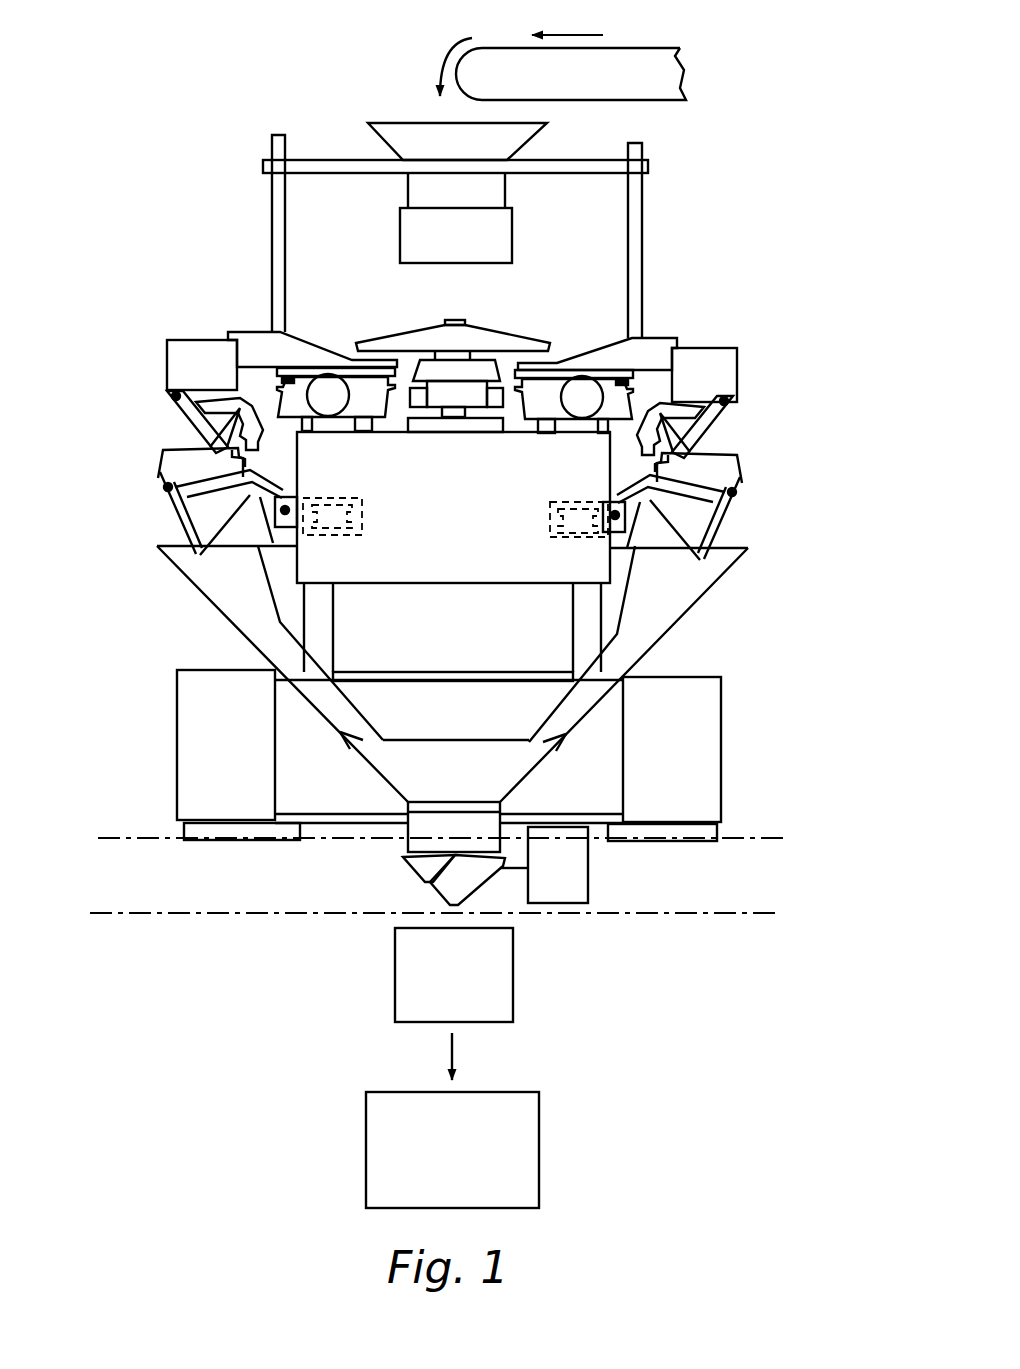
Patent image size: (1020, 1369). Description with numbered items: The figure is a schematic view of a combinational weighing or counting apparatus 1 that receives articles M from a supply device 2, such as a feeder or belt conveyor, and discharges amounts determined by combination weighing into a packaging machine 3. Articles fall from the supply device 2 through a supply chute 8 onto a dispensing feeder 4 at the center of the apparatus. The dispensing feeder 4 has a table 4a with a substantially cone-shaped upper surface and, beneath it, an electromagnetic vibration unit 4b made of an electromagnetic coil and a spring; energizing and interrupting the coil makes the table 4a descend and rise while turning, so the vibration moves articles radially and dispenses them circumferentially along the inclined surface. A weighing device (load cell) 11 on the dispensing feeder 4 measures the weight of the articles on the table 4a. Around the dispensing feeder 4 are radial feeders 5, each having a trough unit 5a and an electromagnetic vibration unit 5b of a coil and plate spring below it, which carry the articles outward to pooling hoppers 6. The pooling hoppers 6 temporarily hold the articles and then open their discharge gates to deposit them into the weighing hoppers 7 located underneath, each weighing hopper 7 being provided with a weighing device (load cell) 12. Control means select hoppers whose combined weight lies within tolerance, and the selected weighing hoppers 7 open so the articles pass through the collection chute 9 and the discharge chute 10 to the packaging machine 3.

The combinational weighing or counting apparatus 1 is at (726, 183).
The supply device 2 is at (675, 48).
The packaging machine 3 is at (515, 1145).
The dispensing feeder 4 is at (457, 389).
The table 4a is at (412, 340).
The electromagnetic vibration unit 4b is at (401, 418).
The radial feeders 5 is at (455, 358).
The trough unit 5a is at (290, 355).
The electromagnetic vibration unit 5b is at (331, 425).
The pooling hoppers 6 is at (179, 358).
The weighing hoppers 7 is at (164, 466).
The supply chute 8 is at (403, 118).
The collection chute 9 is at (190, 590).
The discharge chute 10 is at (500, 983).
The weighing device (load cell) 11 is at (452, 427).
The weighing device (load cell) 12 is at (327, 500).
The material to be weighed M is at (443, 62).